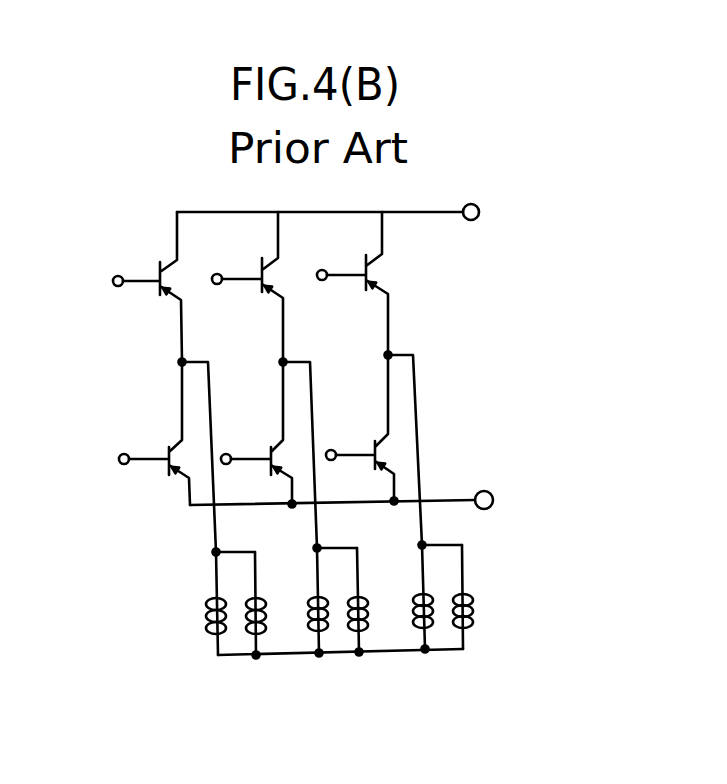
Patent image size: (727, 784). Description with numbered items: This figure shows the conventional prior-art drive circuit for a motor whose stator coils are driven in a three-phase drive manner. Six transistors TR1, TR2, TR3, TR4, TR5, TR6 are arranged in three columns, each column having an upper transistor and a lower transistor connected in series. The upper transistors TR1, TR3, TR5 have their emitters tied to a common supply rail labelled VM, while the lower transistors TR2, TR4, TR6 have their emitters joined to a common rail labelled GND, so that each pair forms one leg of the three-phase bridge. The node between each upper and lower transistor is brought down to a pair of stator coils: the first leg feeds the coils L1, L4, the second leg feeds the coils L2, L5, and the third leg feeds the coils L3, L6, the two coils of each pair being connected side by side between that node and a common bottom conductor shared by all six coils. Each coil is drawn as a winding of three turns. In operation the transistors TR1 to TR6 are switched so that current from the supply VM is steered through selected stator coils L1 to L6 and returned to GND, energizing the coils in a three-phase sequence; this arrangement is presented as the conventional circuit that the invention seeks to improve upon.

The transistor TR1 is at (143, 287).
The transistor TR2 is at (148, 433).
The transistor TR3 is at (243, 287).
The transistor TR4 is at (255, 433).
The transistor TR5 is at (342, 283).
The transistor TR6 is at (356, 428).
The stator coil L1 is at (208, 617).
The stator coil L2 is at (308, 626).
The stator coil L3 is at (432, 622).
The stator coil L4 is at (245, 636).
The stator coil L5 is at (368, 612).
The stator coil L6 is at (472, 612).
The motor power supply terminal VM is at (501, 206).
The ground terminal GND is at (386, 501).